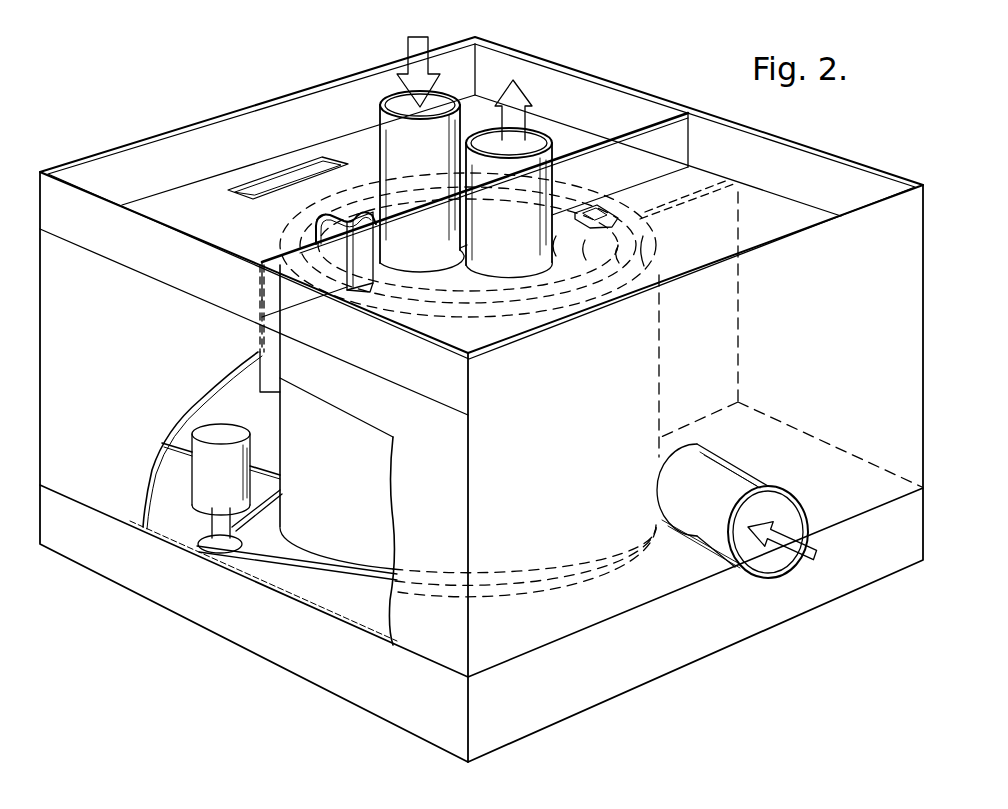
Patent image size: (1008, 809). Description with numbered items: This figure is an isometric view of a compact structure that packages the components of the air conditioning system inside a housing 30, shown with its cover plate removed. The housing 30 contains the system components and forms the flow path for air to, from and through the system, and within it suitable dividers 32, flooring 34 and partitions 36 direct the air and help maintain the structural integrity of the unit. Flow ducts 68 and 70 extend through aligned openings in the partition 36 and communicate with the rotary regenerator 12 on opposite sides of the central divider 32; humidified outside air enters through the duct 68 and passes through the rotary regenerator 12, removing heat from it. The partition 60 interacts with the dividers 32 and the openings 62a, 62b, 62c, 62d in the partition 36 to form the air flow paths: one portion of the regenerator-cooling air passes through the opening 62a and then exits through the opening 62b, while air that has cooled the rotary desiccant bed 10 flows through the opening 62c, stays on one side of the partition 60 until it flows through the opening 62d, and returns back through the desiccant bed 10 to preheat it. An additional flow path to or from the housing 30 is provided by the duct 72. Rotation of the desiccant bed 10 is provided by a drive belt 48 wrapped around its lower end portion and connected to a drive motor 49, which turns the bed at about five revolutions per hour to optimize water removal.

The rotary desiccant bed 10 is at (593, 310).
The rotary regenerator 12 is at (513, 323).
The housing 30 is at (212, 118).
The dividers 32 is at (257, 354).
The flooring 34 is at (173, 418).
The partitions 36 is at (206, 215).
The drive belt 48 is at (321, 572).
The drive motor 49 is at (198, 498).
The partition 60 is at (622, 135).
The opening 62a is at (333, 206).
The opening 62b is at (251, 191).
The opening 62c is at (612, 226).
The opening 62d is at (408, 283).
The flow duct 68 is at (375, 123).
The flow duct 70 is at (552, 181).
The duct 72 is at (767, 482).